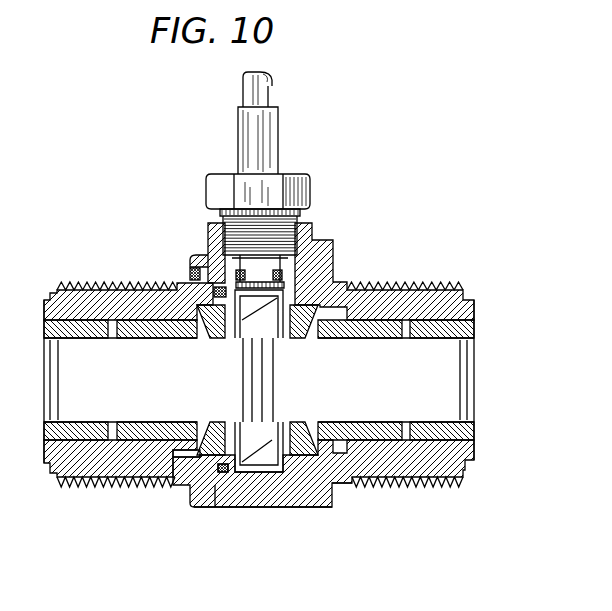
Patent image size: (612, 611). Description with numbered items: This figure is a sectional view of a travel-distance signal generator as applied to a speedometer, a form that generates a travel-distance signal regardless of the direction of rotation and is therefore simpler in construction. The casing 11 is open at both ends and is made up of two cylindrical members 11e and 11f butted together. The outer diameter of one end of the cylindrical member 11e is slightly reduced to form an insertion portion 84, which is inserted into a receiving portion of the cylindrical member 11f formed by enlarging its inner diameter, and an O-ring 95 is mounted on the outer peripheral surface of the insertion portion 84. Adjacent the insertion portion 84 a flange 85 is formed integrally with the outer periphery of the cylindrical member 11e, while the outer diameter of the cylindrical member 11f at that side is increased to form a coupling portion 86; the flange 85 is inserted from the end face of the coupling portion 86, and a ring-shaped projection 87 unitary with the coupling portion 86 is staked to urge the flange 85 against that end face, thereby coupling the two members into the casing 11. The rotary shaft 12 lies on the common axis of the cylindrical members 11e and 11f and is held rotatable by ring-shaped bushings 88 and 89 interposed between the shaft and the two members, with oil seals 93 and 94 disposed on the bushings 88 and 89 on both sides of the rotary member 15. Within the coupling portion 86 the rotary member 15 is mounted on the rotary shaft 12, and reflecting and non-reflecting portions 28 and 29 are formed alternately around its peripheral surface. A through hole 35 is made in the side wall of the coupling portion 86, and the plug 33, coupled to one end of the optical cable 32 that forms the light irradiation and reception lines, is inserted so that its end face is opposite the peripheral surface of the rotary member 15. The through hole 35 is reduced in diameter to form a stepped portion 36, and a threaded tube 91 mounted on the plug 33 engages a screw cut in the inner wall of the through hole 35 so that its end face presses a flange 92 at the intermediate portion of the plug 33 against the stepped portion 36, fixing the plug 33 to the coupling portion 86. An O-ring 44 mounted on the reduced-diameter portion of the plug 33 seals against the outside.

The casing 11 is at (97, 482).
The cylindrical member 11e is at (73, 470).
The cylindrical member 11f is at (446, 484).
The rotary shaft 12 is at (455, 372).
The rotary member 15 is at (300, 507).
The reflecting portion 28 is at (253, 476).
The non-reflecting portion 29 is at (262, 442).
The optical cable 32 is at (268, 93).
The plug 33 is at (265, 138).
The through hole 35 is at (210, 258).
The stepped portion 36 is at (300, 262).
The O-ring 44 is at (285, 276).
The insertion portion 84 is at (200, 465).
The flange 85 is at (195, 270).
The coupling portion 86 is at (316, 507).
The ring-shaped projection 87 is at (208, 252).
The bushing 88 is at (140, 435).
The bushing 89 is at (400, 484).
The threaded tube 91 is at (300, 221).
The flange 92 is at (292, 262).
The oil seal 93 is at (186, 483).
The oil seal 94 is at (340, 484).
The O-ring 95 is at (223, 472).